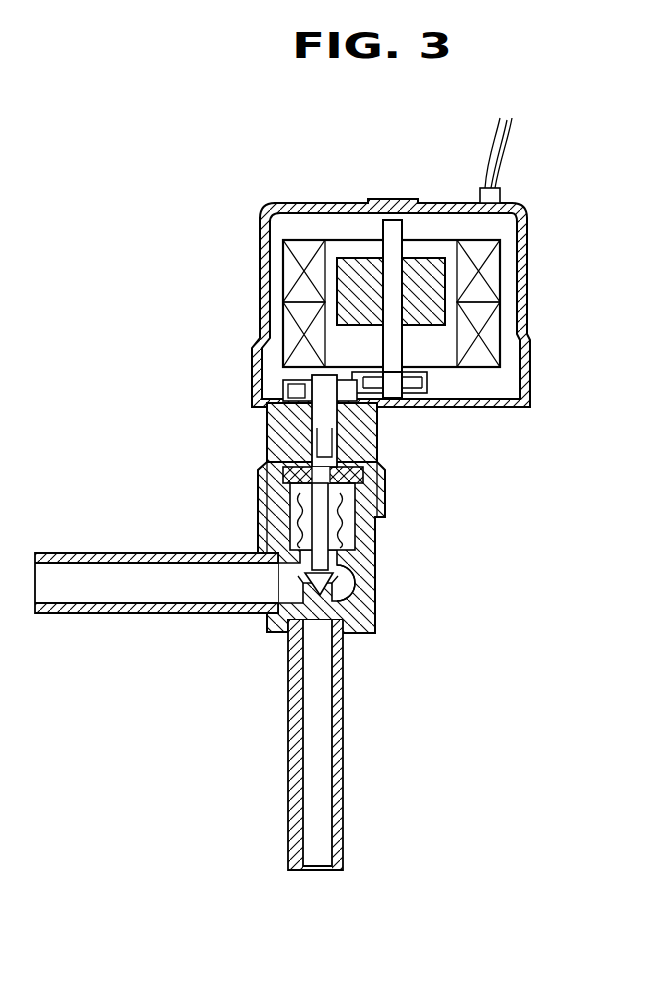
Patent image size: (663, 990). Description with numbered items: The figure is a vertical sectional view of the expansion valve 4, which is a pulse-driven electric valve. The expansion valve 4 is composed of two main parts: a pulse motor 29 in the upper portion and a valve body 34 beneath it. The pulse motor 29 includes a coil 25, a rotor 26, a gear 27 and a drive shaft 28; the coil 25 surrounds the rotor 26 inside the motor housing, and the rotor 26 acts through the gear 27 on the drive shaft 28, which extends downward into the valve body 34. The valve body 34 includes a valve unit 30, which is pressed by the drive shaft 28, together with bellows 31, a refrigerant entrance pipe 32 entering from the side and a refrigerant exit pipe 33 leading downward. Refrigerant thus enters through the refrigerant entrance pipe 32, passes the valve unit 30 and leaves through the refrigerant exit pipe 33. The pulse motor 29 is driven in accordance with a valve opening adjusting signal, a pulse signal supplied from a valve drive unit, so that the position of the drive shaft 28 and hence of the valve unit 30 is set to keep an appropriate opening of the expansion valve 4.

The expansion valve 4 is at (242, 165).
The coil 25 is at (490, 330).
The rotor 26 is at (425, 275).
The gear 27 is at (295, 385).
The drive shaft 28 is at (300, 425).
The pulse motor 29 is at (258, 248).
The valve unit 30 is at (333, 578).
The bellows 31 is at (300, 530).
The refrigerant entrance pipe 32 is at (190, 613).
The refrigerant exit pipe 33 is at (345, 785).
The valve body 34 is at (375, 545).